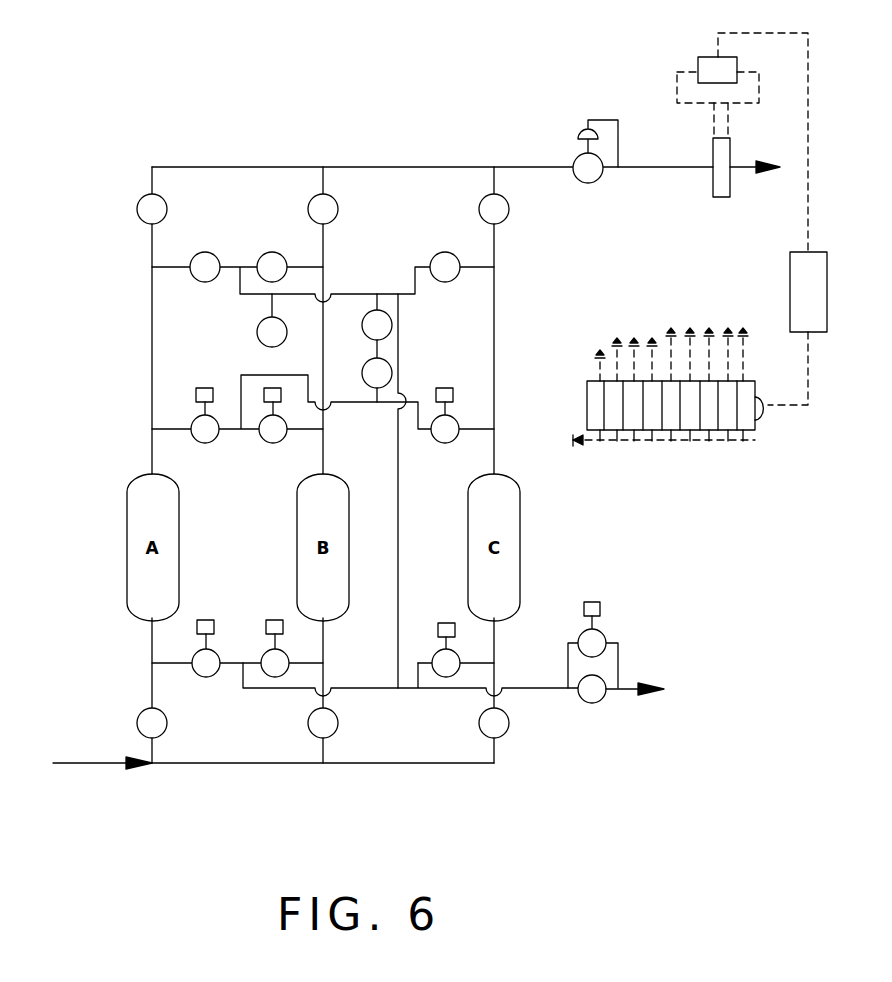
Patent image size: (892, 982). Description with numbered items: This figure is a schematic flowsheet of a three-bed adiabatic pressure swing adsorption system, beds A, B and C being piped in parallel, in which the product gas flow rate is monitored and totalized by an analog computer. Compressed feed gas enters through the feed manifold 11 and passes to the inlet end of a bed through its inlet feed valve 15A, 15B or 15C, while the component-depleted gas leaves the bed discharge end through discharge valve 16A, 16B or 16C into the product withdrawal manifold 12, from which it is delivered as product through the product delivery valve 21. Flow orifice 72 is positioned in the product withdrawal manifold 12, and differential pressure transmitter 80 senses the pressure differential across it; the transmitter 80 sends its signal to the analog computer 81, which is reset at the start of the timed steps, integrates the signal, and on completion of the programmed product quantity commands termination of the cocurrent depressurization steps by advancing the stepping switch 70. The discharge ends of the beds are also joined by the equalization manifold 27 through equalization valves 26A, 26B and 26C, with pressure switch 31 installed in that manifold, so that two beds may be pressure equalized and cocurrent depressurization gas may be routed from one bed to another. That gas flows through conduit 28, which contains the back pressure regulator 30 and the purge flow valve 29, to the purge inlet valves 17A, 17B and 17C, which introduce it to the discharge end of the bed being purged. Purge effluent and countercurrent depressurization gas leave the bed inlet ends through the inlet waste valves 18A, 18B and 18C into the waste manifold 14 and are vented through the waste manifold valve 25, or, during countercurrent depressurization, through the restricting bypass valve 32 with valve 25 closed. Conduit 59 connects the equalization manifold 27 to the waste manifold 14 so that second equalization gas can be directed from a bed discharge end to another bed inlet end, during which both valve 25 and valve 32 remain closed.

The feed manifold 11 is at (90, 766).
The product withdrawal manifold 12 is at (522, 166).
The waste manifold 14 is at (370, 690).
The bed A inlet feed valve 15A is at (166, 728).
The bed B inlet feed valve 15B is at (337, 728).
The bed C inlet feed valve 15C is at (509, 727).
The bed A discharge valve 16A is at (165, 203).
The bed B discharge valve 16B is at (336, 204).
The bed C discharge valve 16C is at (506, 220).
The bed A purge inlet valve 17A is at (194, 440).
The bed B purge inlet valve 17B is at (262, 440).
The bed C purge inlet valve 17C is at (447, 443).
The bed A inlet waste valve 18A is at (217, 652).
The bed B inlet waste valve 18B is at (268, 657).
The bed C inlet waste valve 18C is at (458, 652).
The product delivery valve 21 is at (598, 180).
The waste manifold valve 25 is at (598, 703).
The bed A equalization valve 26A is at (201, 252).
The bed B equalization valve 26B is at (272, 252).
The bed C equalization valve 26C is at (453, 243).
The equalization manifold 27 is at (350, 291).
The purge conduit 28 is at (372, 348).
The purge flow valve 29 is at (363, 378).
The back pressure regulator 30 is at (362, 322).
The pressure switch 31 is at (257, 333).
The bypass valve 32 is at (604, 633).
The equalization transfer conduit 59 is at (400, 355).
The stepping switch 70 is at (755, 432).
The flow orifice 72 is at (730, 197).
The differential pressure transmitter 80 is at (706, 56).
The analog computer 81 is at (827, 292).